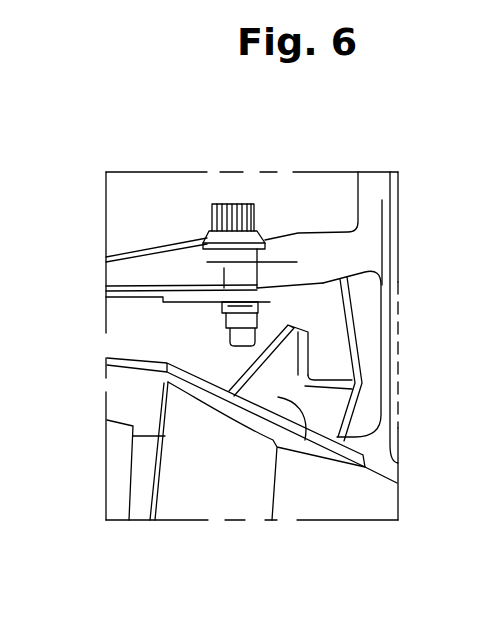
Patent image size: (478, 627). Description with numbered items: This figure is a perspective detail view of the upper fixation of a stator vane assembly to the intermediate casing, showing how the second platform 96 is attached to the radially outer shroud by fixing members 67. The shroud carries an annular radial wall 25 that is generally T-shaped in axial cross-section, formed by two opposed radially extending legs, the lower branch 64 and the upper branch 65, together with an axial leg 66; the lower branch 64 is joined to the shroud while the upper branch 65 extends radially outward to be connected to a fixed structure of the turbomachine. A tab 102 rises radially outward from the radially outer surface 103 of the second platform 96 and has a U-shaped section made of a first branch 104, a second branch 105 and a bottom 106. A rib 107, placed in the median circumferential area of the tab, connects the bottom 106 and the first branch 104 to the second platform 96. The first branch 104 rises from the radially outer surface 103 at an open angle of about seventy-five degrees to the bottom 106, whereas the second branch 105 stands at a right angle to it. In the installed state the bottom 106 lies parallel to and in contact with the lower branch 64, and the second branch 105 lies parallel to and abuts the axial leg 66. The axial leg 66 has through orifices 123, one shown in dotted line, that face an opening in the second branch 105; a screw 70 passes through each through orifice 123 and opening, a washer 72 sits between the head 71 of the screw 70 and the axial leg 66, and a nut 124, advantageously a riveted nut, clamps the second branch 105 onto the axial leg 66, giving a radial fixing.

The annular radial wall 25 is at (402, 197).
The lower branch 64 is at (383, 378).
The upper branch 65 is at (372, 193).
The axial leg 66 is at (286, 263).
The fixing members 67 is at (195, 212).
The screw 70 is at (233, 336).
The head 71 is at (232, 203).
The washer 72 is at (278, 232).
The second platform 96 is at (97, 391).
The tab 102 is at (352, 349).
The radially outer surface 103 is at (110, 349).
The first branch 104 is at (330, 407).
The second branch 105 is at (307, 290).
The bottom 106 is at (347, 320).
The rib 107 is at (305, 440).
The through orifice 123 is at (222, 270).
The nut 124 is at (222, 308).